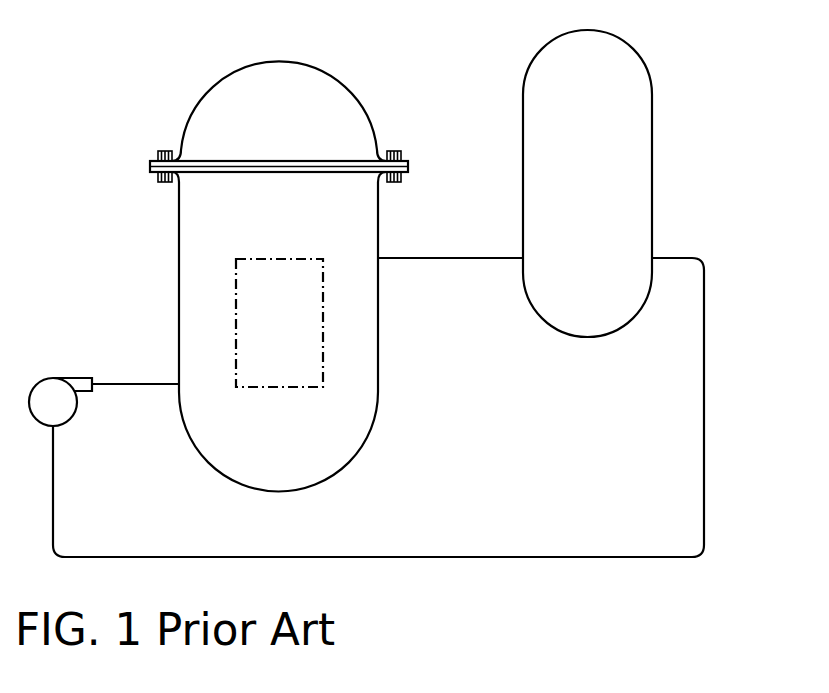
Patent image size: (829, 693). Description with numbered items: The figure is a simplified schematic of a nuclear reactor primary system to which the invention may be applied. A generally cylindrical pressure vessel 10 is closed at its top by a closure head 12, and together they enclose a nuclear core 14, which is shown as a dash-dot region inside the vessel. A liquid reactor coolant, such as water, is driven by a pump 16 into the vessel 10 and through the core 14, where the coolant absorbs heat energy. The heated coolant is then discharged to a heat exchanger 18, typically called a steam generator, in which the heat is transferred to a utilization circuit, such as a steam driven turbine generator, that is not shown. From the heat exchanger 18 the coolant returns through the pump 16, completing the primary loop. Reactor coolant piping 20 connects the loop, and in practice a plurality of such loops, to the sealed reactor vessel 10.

The pressure vessel 10 is at (262, 336).
The closure head 12 is at (190, 112).
The nuclear core 14 is at (236, 311).
The pump 16 is at (48, 380).
The heat exchanger 18 is at (652, 127).
The reactor coolant piping 20 is at (704, 497).